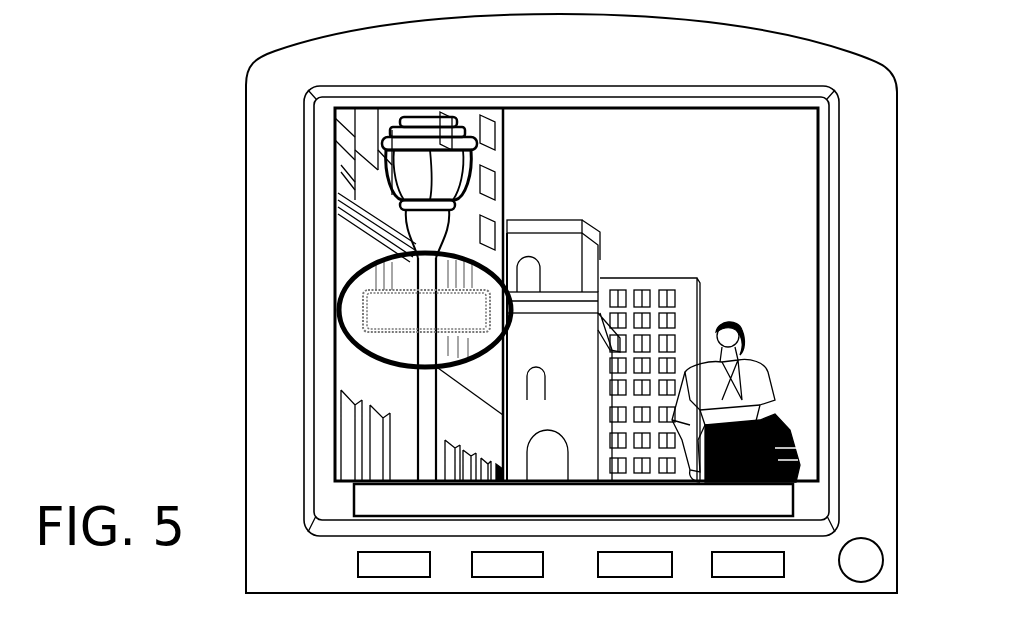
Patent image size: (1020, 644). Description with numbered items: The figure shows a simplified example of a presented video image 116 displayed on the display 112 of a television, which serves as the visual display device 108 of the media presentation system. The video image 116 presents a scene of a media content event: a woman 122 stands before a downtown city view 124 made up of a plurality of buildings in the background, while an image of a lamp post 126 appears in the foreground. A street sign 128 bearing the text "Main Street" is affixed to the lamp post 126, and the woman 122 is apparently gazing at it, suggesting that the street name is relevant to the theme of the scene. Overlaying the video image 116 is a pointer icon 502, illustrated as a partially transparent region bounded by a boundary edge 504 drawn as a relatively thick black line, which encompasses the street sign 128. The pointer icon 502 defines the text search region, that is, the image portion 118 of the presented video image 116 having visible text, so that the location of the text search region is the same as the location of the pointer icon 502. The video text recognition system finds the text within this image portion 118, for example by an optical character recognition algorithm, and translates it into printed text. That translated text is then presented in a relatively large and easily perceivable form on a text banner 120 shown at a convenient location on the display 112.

The visual display device 108 is at (247, 237).
The display 112 is at (825, 310).
The video image 116 is at (668, 142).
The image portion 118 is at (492, 260).
The text banner 120 is at (765, 498).
The woman 122 is at (733, 305).
The downtown city view 124 is at (685, 205).
The lamp post 126 is at (438, 393).
The street sign 128 is at (362, 348).
The pointer icon 502 is at (468, 322).
The boundary edge 504 is at (338, 310).